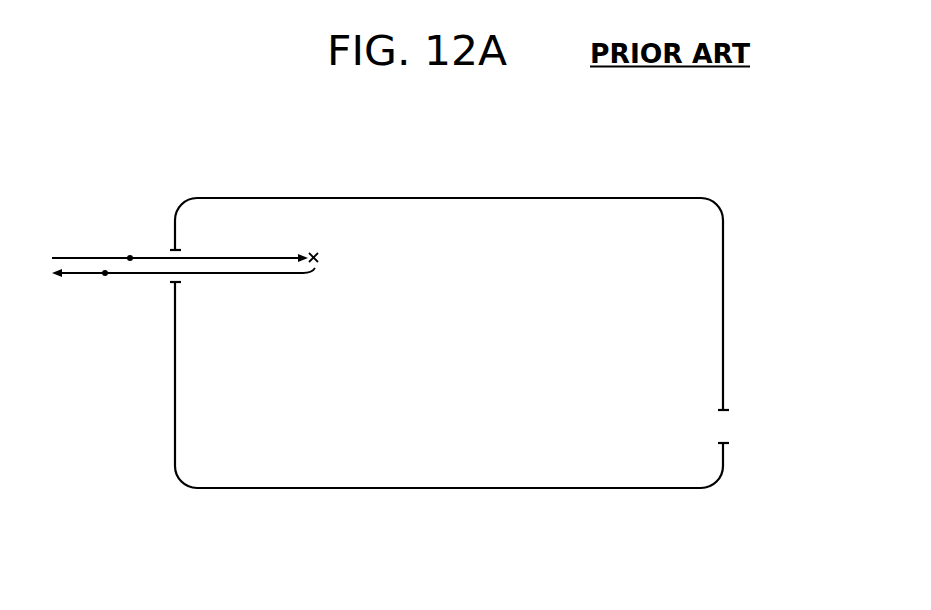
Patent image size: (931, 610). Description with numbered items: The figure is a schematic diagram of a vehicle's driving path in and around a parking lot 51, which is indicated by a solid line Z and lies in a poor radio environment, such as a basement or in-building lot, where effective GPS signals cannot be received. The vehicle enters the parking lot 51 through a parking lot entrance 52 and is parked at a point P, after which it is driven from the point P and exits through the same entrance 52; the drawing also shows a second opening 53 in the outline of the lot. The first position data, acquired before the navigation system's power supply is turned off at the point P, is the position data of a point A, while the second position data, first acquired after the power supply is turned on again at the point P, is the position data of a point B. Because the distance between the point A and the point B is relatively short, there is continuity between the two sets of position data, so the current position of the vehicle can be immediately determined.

The parking lot 51 is at (408, 207).
The parking lot entrance 52 is at (168, 252).
The second gap 53 is at (725, 425).
The solid line Z is at (567, 198).
The point A is at (128, 246).
The point B is at (104, 286).
The point P is at (314, 245).